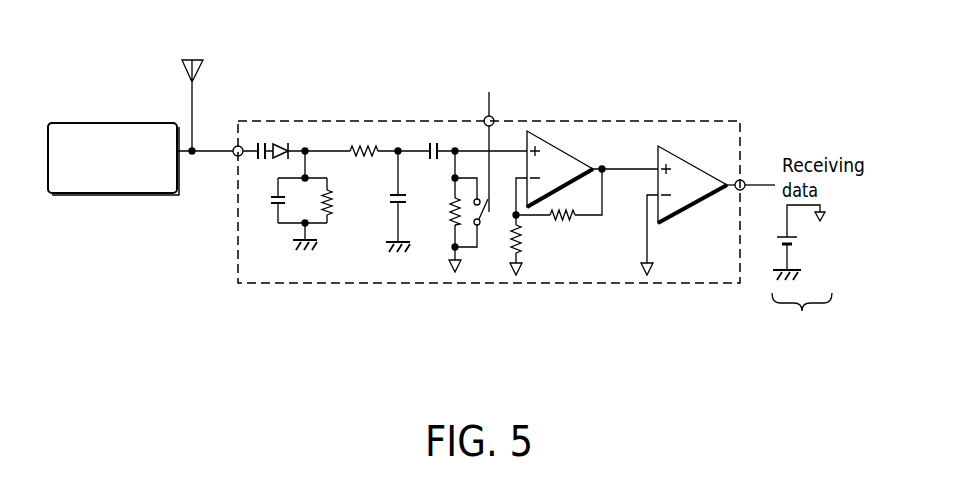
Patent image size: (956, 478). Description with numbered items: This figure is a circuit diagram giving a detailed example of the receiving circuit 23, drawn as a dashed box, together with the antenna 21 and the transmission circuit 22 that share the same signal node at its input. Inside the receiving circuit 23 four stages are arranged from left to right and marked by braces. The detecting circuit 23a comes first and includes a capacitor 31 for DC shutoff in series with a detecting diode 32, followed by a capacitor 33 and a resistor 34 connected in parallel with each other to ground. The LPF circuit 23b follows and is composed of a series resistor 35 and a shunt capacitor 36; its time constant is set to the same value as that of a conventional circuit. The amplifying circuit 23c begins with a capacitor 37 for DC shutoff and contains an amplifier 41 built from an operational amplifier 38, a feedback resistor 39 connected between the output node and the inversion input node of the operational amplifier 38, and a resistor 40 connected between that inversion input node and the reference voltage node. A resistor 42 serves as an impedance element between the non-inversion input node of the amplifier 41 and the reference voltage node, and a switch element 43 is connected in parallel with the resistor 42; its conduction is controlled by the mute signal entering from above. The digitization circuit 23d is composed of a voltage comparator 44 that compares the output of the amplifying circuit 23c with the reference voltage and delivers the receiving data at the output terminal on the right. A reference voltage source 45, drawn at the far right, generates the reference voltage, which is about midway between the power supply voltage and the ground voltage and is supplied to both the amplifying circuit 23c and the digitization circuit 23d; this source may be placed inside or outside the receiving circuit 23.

The antenna 21 is at (205, 74).
The transmission circuit 22 is at (113, 122).
The receiving circuit 23 is at (704, 121).
The detecting circuit 23a is at (302, 237).
The LPF circuit 23b is at (396, 258).
The amplifying circuit 23c is at (515, 230).
The digitization circuit 23d is at (680, 270).
The capacitor 31 is at (261, 141).
The detecting diode 32 is at (287, 140).
The capacitor 33 is at (268, 199).
The resistor 34 is at (340, 225).
The resistor 35 is at (366, 167).
The capacitor 36 is at (416, 225).
The capacitor 37 is at (434, 140).
The operational amplifier 38 is at (570, 160).
The feedback resistor 39 is at (572, 226).
The resistor 40 is at (535, 251).
The amplifier 41 is at (584, 176).
The resistor 42 is at (448, 215).
The switch element 43 is at (486, 225).
The voltage comparator 44 is at (625, 293).
The reference voltage source 45 is at (793, 245).